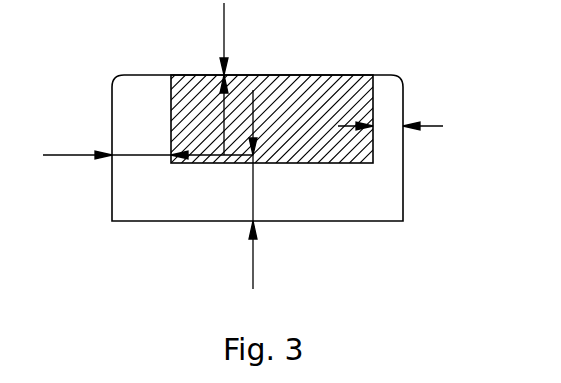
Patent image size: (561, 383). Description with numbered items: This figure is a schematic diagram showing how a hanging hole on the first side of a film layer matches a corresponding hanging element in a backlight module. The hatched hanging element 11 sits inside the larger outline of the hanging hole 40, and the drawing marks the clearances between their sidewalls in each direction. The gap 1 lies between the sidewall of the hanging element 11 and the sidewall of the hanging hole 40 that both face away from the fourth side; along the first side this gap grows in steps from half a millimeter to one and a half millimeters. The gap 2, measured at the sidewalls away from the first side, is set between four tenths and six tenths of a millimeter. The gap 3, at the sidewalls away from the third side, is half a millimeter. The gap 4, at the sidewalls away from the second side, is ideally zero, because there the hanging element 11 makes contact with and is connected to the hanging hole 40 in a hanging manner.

The hanging element 11 is at (273, 103).
The hanging hole 40 is at (345, 178).
The gap ① 1 is at (148, 145).
The gap ② 2 is at (265, 189).
The gap ③ 3 is at (390, 116).
The gap ④ 4 is at (235, 79).